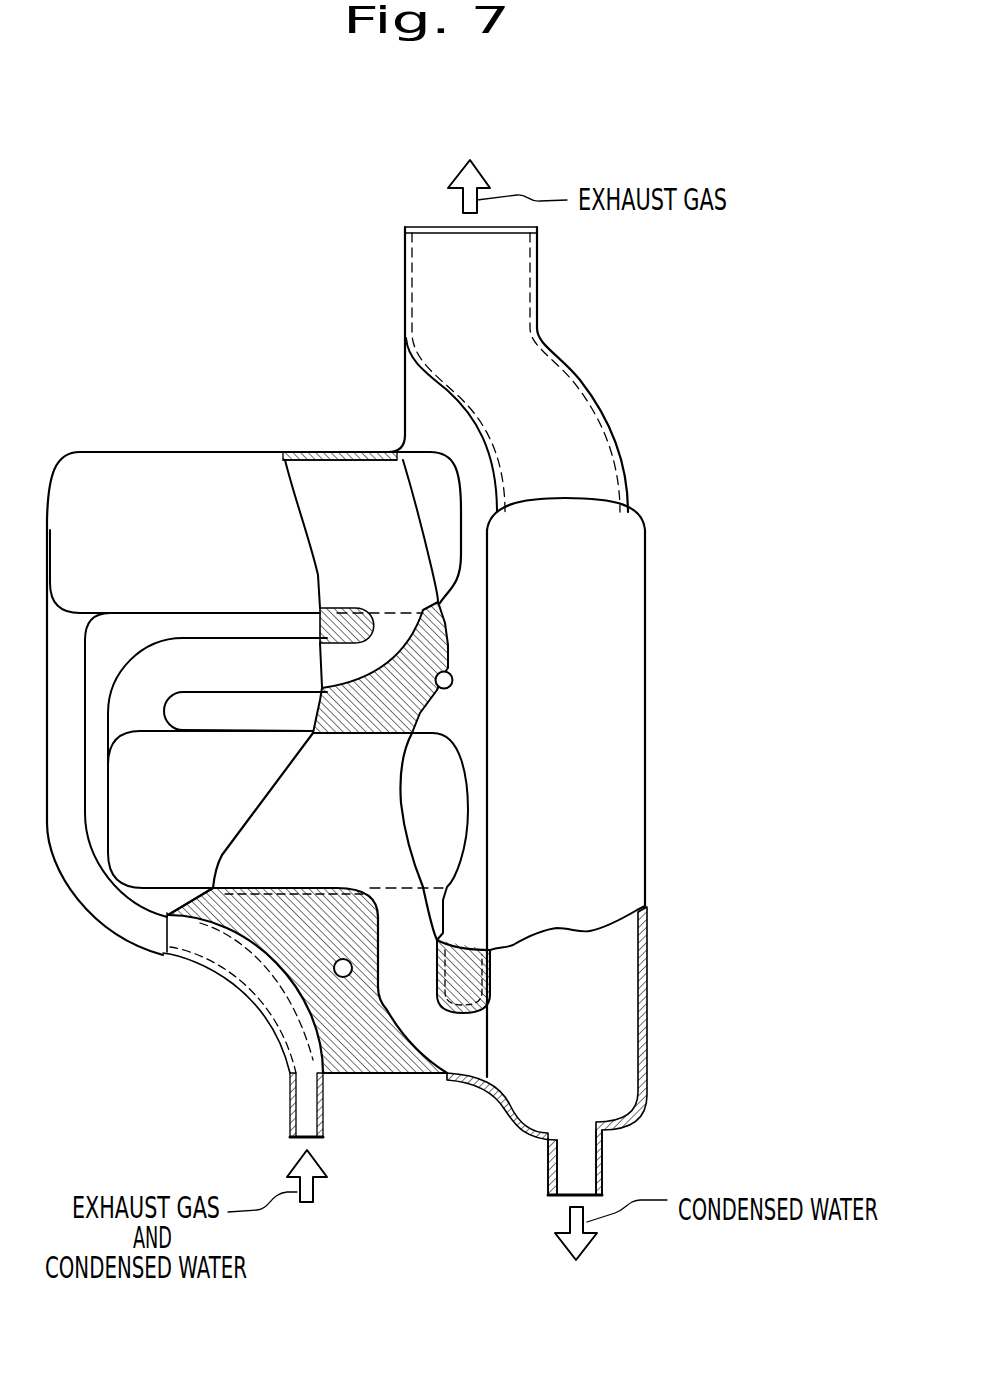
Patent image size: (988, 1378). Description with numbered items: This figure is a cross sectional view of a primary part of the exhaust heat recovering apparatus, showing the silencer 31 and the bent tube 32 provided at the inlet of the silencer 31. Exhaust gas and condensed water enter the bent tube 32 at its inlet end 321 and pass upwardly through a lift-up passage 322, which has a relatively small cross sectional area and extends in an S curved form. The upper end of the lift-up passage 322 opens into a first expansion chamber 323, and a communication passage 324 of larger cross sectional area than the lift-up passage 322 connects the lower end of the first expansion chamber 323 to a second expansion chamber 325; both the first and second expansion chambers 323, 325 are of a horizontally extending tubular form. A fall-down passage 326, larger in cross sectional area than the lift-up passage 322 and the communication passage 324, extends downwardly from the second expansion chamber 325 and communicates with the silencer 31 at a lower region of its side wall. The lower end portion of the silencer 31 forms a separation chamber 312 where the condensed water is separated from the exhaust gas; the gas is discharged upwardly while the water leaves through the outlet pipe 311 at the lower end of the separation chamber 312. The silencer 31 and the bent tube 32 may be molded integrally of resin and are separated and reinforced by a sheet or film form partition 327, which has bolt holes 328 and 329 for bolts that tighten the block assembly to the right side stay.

The silencer 31 is at (623, 593).
The outlet pipe 311 is at (547, 1172).
The separation chamber 312 is at (617, 1070).
The bent tube 32 is at (189, 985).
The inlet end 321 is at (290, 1115).
The lift-up passage 322 is at (243, 957).
The first expansion chamber 323 is at (323, 502).
The communication passage 324 is at (363, 663).
The second expansion chamber 325 is at (357, 927).
The fall-down passage 326 is at (413, 987).
The partition 327 is at (247, 913).
The bolt hole 328 is at (343, 978).
The bolt hole 329 is at (453, 678).